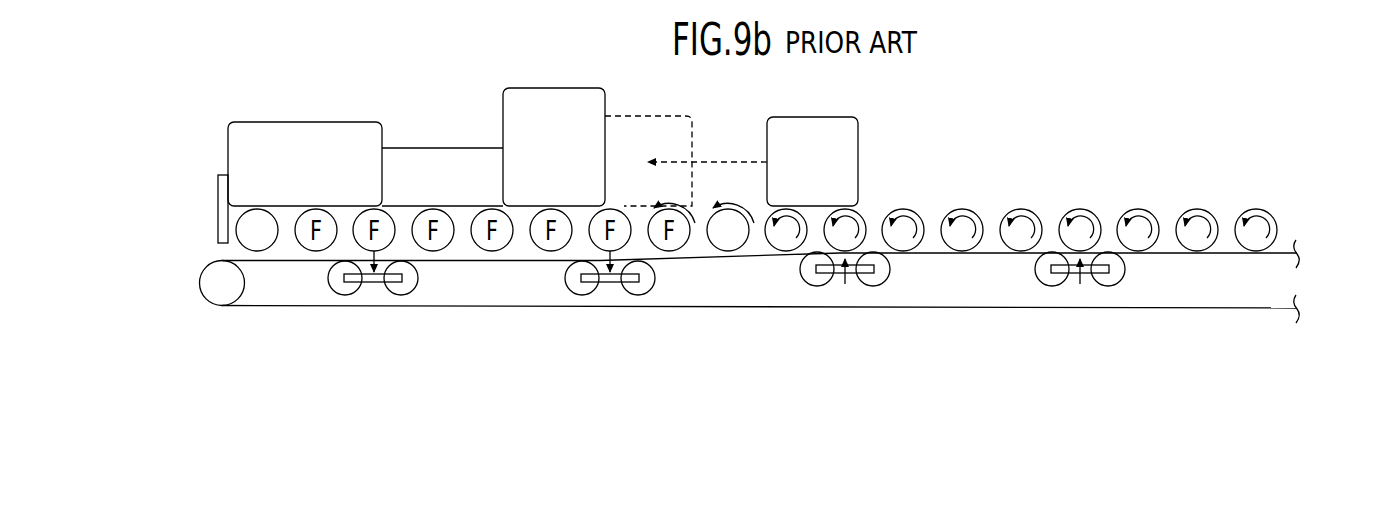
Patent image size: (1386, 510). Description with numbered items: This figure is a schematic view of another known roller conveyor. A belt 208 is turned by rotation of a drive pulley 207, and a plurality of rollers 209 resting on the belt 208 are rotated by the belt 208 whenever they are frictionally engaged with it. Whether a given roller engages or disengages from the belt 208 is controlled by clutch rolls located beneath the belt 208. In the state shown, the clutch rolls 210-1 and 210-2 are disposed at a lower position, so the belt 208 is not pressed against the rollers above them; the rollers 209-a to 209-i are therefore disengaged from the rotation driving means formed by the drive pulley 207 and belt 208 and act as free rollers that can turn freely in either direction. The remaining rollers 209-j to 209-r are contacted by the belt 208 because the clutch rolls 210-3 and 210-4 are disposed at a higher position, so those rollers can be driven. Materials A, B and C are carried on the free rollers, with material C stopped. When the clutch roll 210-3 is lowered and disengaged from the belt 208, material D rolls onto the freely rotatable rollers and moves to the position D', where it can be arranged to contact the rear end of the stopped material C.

The material A is at (295, 130).
The material B is at (440, 158).
The stopped material C is at (553, 100).
The material D is at (753, 136).
The material (shifted position) D' is at (648, 135).
The drive pulley 207 is at (216, 305).
The belt 208 is at (523, 308).
The rollers 209 is at (961, 208).
The roller 209-a is at (237, 226).
The roller 209-i is at (719, 249).
The roller 209-j is at (784, 253).
The roller 209-r is at (1255, 208).
The clutch roll 210-1 is at (370, 287).
The clutch roll 210-2 is at (614, 287).
The clutch roll 210-3 is at (856, 284).
The clutch roll 210-4 is at (1068, 284).